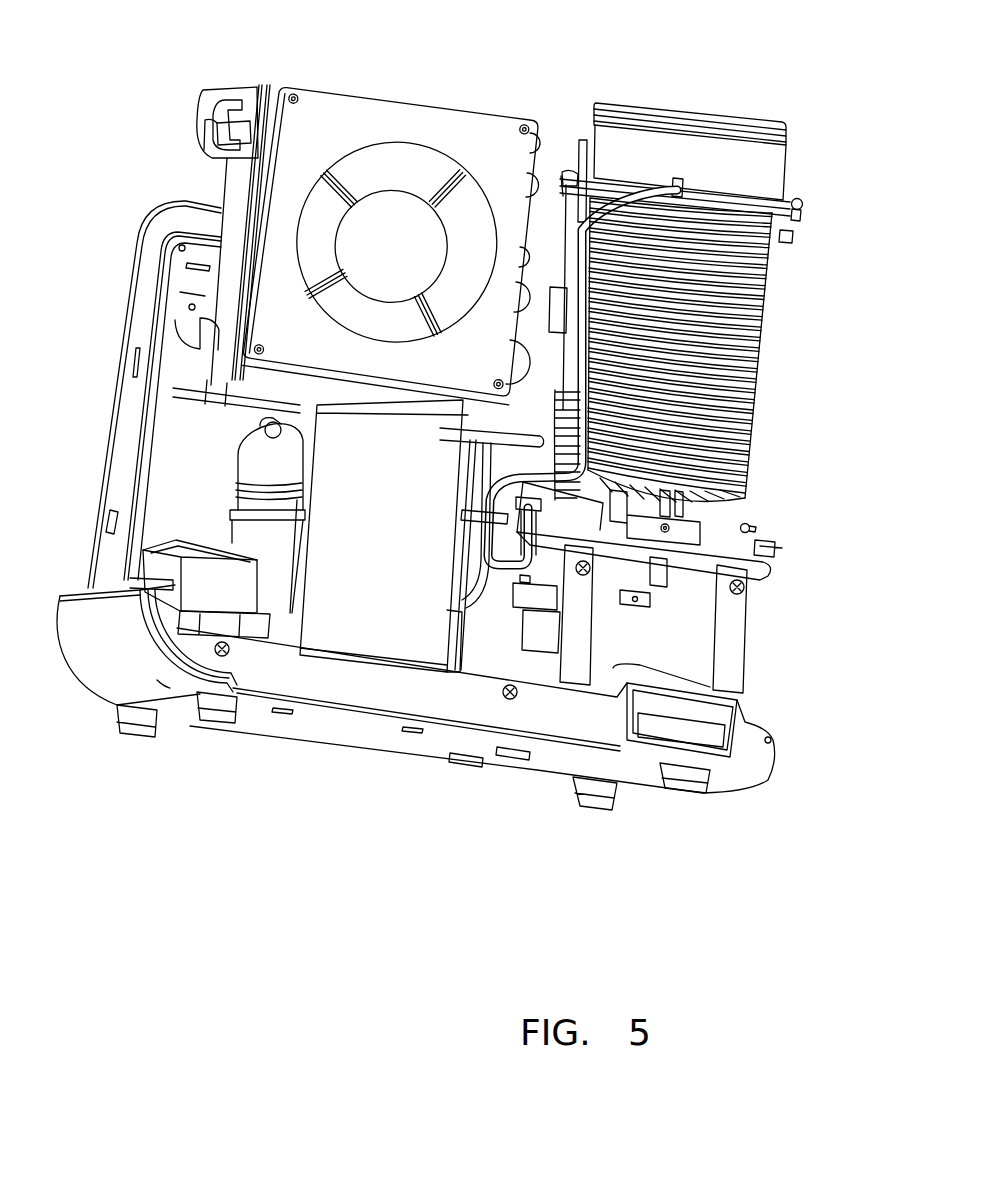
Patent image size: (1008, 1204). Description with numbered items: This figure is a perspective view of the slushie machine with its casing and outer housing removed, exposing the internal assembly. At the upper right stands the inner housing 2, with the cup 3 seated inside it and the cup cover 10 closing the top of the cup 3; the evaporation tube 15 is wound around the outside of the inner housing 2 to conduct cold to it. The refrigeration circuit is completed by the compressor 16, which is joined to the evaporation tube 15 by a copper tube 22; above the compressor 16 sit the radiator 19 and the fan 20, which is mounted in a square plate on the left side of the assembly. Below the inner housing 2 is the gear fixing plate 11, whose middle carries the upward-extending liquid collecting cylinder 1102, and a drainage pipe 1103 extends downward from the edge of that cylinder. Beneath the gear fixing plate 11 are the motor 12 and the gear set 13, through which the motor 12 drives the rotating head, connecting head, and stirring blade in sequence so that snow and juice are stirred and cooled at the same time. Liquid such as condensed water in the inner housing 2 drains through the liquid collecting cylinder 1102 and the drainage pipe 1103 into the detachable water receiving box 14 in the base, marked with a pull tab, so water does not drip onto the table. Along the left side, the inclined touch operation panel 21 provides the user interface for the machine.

The inner housing 2 is at (798, 212).
The cup 3 is at (768, 173).
The cup cover 10 is at (705, 103).
The gear fixing plate 11 is at (727, 547).
The motor 12 is at (550, 633).
The gear set 13 is at (600, 565).
The water receiving box 14 is at (697, 737).
The evaporation tube 15 is at (767, 313).
The compressor 16 is at (475, 617).
The radiator 19 is at (237, 212).
The fan 20 is at (385, 220).
The touch operation panel 21 is at (130, 428).
The copper tube 22 is at (623, 203).
The liquid collecting cylinder 1102 is at (640, 503).
The drainage pipe 1103 is at (667, 577).